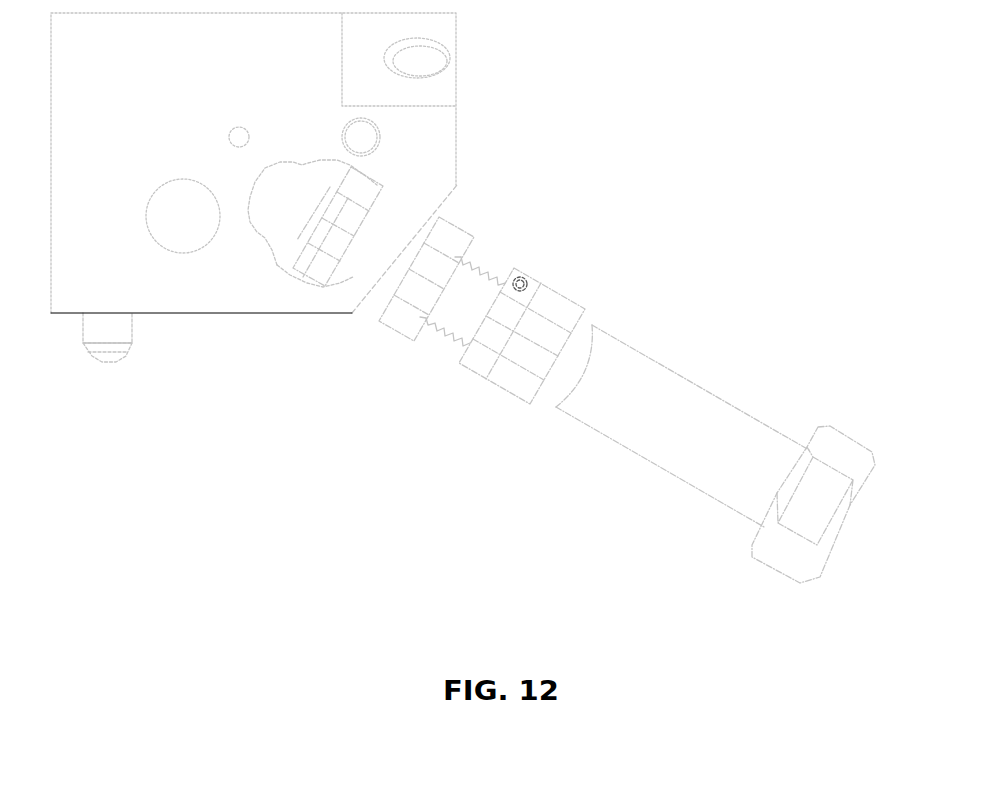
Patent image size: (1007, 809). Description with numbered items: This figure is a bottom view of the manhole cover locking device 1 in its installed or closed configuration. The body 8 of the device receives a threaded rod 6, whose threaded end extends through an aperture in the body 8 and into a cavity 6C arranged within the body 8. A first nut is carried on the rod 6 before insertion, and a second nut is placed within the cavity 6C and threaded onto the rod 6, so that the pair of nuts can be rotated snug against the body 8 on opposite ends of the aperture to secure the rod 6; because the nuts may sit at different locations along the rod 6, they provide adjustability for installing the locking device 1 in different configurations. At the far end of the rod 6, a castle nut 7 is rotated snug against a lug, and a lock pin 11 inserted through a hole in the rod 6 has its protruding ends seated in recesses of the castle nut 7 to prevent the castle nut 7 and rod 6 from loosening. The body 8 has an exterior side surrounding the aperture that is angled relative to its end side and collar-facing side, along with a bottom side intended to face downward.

The manhole cover locking device 1 is at (604, 146).
The rod 6 is at (462, 325).
The cavity 6C is at (277, 265).
The castle nut 7 is at (507, 368).
The body 8 is at (194, 287).
The lock pin 11 is at (520, 283).